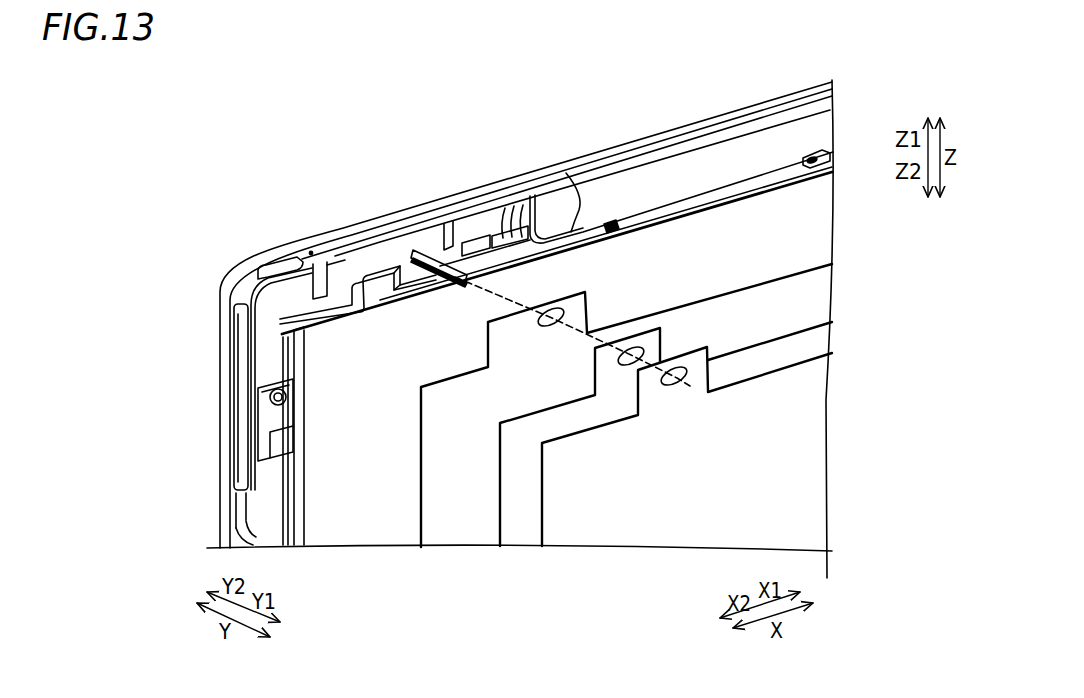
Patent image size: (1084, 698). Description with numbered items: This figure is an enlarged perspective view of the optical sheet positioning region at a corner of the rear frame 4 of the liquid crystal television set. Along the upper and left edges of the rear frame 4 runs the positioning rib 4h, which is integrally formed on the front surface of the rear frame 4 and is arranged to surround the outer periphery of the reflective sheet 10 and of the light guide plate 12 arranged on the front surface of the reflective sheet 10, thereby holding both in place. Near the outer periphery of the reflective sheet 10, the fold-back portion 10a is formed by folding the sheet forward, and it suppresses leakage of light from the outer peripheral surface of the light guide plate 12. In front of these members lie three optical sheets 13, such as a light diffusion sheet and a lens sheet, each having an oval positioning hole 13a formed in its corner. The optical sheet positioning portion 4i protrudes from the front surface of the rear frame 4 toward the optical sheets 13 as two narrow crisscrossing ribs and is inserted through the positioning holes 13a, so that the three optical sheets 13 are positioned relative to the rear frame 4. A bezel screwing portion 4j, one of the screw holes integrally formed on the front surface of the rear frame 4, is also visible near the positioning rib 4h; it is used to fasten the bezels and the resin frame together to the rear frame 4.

The rear frame 4 is at (231, 264).
The positioning rib 4h is at (287, 477).
The optical sheet positioning portion 4i is at (417, 262).
The bezel screwing portion 4j is at (270, 402).
The reflective sheet 10 is at (387, 274).
The fold-back portion 10a is at (297, 350).
The light guide plate 12 is at (330, 266).
The optical sheet 13 is at (453, 513).
The positioning hole 13a is at (553, 307).